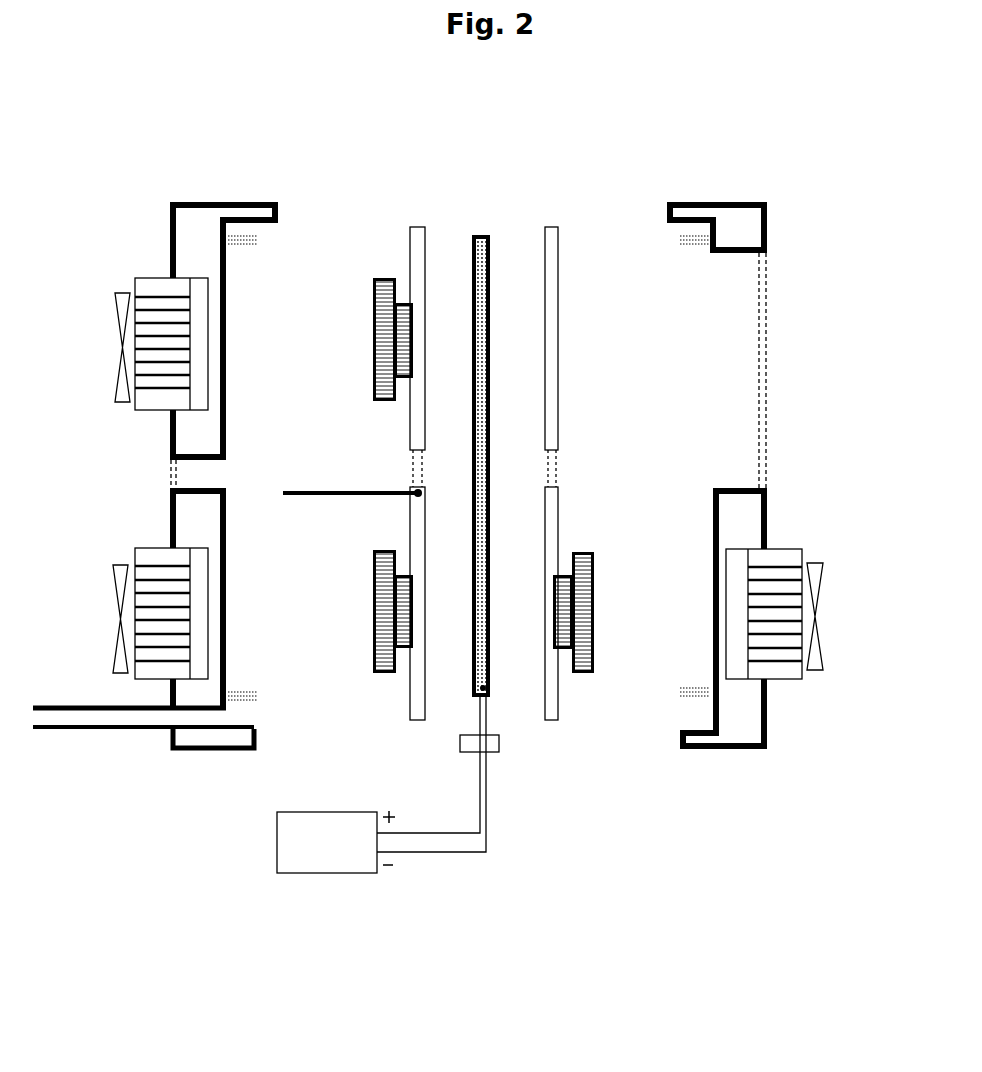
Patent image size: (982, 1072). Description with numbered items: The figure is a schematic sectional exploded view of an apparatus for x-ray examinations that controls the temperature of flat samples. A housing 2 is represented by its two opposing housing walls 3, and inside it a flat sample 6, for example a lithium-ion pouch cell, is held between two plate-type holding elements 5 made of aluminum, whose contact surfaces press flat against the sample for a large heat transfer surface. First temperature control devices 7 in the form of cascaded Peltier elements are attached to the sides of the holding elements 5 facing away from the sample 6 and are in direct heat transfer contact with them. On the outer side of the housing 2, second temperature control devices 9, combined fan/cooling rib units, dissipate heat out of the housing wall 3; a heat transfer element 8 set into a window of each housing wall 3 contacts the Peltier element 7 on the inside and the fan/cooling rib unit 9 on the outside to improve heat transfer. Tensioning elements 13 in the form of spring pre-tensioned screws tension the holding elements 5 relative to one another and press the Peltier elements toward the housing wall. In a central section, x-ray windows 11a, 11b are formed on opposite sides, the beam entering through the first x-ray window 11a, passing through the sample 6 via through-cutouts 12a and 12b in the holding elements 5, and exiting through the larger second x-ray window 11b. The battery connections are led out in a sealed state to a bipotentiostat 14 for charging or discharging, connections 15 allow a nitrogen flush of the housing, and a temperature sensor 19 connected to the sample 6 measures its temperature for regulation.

The housing 2 is at (205, 222).
The housing wall 3 is at (170, 221).
The plate-type holding element 5 is at (415, 227).
The flat sample 6 is at (484, 237).
The first temperature control device 7 is at (372, 335).
The heat transfer element 8 is at (157, 293).
The second temperature control device 9 is at (118, 347).
The first x-ray window 11a is at (165, 475).
The second x-ray window 11b is at (762, 340).
The through-cutout 12a is at (412, 470).
The through-cutout 12b is at (558, 470).
The tensioning element 13 is at (238, 238).
The bipotentiostat 14 is at (315, 850).
The connection 15 is at (62, 718).
The temperature sensor 19 is at (320, 497).